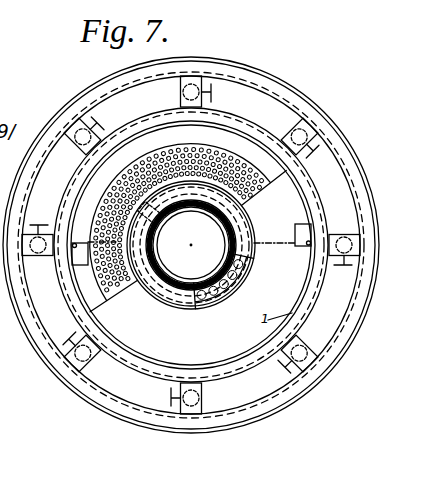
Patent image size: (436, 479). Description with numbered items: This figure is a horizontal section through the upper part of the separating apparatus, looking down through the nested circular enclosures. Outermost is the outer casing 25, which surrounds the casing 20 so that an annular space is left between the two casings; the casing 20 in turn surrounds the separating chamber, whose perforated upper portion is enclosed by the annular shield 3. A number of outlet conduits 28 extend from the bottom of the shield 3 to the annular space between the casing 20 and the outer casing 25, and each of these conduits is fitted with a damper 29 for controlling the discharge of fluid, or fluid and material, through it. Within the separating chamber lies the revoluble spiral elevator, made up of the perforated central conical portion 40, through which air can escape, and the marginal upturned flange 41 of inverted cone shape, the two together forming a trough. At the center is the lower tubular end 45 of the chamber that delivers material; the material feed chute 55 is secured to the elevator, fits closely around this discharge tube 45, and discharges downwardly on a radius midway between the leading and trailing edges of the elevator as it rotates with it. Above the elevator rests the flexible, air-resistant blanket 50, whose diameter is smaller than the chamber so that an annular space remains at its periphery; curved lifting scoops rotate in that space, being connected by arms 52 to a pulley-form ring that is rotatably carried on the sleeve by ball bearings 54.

The outer casing 25 is at (241, 63).
The casing 20 is at (296, 113).
The annular shield 3 is at (133, 372).
The marginal upturned flange 41 is at (234, 137).
The outlet conduits 28 is at (76, 146).
The dampers 29 is at (180, 94).
The central conical portion 40 is at (135, 287).
The lower tubular end 45 is at (168, 280).
The ball bearings 54 is at (222, 292).
The material feed chute 55 is at (147, 222).
The blanket 50 is at (82, 259).
The arms 52 is at (270, 247).